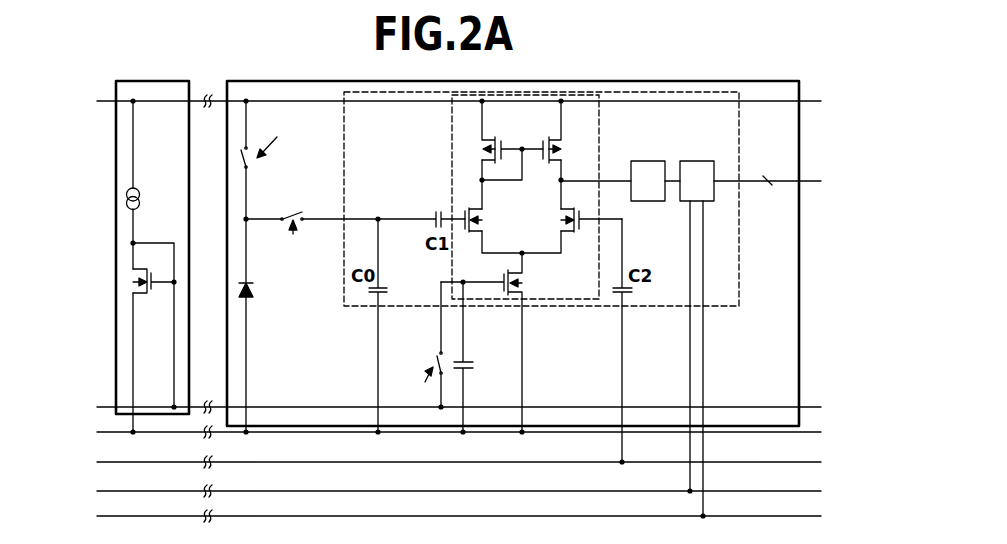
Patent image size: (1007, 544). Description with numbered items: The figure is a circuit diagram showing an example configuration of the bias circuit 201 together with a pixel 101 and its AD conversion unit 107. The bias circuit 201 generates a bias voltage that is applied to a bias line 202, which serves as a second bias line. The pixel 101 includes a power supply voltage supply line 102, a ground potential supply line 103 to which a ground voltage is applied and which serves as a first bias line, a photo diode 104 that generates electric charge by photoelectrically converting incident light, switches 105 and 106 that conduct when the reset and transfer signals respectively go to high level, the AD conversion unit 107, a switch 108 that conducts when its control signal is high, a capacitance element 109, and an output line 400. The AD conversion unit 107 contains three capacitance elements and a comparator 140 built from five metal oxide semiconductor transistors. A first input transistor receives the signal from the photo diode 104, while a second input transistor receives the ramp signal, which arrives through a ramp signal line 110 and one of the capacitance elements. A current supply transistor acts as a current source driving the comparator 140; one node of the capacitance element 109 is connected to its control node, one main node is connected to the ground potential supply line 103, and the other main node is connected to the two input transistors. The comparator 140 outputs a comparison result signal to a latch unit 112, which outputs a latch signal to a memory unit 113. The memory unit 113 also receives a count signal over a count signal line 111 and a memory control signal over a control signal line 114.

The pixel 101 is at (299, 81).
The power supply voltage supply line 102 is at (104, 101).
The ground potential supply line 103 is at (105, 432).
The photo diode 104 is at (256, 290).
The switch 105 is at (247, 148).
The switch 106 is at (292, 212).
The AD conversion unit 107 is at (627, 92).
The switch 108 is at (438, 355).
The capacitance element 109 is at (474, 363).
The ramp signal line 110 is at (105, 462).
The count signal line 111 is at (105, 491).
The latch unit 112 is at (646, 161).
The memory unit 113 is at (697, 161).
The control signal line 114 is at (105, 516).
The comparator 140 is at (452, 139).
The bias circuit 201 is at (153, 81).
The bias line 202 is at (105, 407).
The output line 400 is at (808, 181).